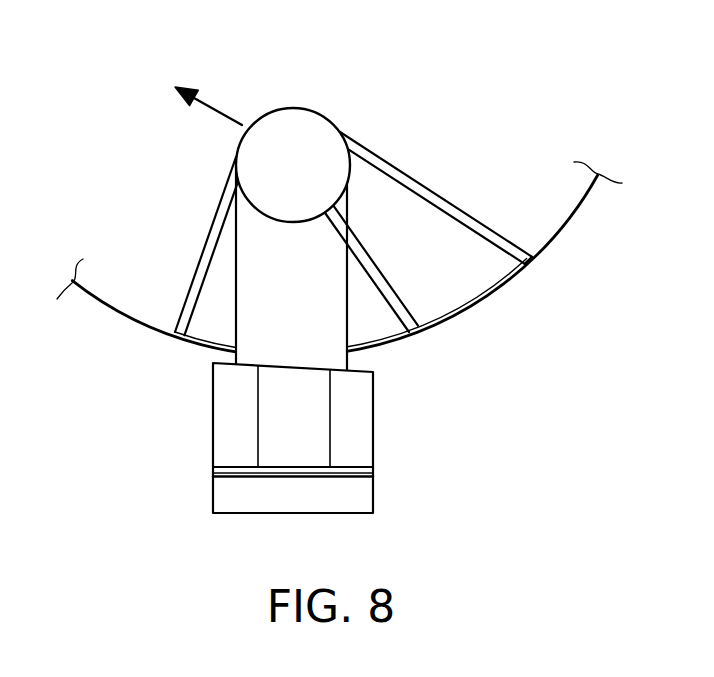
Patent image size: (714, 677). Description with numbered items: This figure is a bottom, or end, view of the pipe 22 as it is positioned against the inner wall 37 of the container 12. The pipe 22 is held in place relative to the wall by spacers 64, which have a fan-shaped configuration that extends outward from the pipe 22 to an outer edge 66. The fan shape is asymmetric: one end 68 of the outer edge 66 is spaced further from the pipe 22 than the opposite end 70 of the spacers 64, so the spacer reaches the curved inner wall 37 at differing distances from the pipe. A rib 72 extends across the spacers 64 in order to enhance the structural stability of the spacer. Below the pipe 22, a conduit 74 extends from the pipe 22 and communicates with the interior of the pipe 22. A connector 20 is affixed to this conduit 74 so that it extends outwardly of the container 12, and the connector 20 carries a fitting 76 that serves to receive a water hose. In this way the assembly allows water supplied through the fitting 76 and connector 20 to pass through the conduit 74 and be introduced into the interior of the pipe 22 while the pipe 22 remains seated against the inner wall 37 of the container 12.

The container 12 is at (112, 309).
The inner wall 37 is at (563, 228).
The pipe 22 is at (305, 109).
The spacers 64 is at (412, 178).
The outer edge 66 is at (474, 301).
The one end 68 is at (525, 268).
The opposite end 70 is at (168, 328).
The rib 72 is at (366, 252).
The conduit 74 is at (276, 289).
The connector 20 is at (362, 418).
The fitting 76 is at (375, 482).